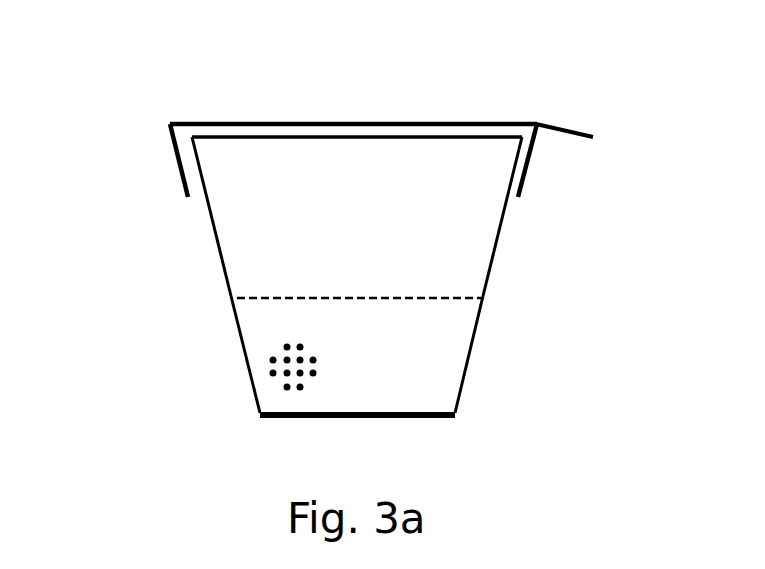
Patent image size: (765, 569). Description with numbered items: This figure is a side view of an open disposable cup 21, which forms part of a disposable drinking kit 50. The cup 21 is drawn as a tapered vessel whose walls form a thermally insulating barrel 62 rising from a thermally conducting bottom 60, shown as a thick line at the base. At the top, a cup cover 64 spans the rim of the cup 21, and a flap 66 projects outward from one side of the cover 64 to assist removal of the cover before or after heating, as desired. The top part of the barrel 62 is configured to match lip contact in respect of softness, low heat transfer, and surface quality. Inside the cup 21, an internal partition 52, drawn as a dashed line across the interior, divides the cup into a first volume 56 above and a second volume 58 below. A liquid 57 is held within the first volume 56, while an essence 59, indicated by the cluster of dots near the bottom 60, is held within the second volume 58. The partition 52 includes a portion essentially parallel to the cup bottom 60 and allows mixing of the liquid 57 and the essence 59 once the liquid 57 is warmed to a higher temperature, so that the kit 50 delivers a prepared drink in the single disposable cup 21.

The disposable cup 21 is at (193, 274).
The disposable drinking kit 50 is at (612, 311).
The internal partition 52 is at (420, 298).
The first volume 56 is at (443, 257).
The liquid 57 is at (443, 278).
The second volume 58 is at (255, 313).
The essence 59 is at (280, 365).
The thermally conducting bottom 60 is at (422, 420).
The thermally insulating barrel 62 is at (217, 233).
The cup cover 64 is at (458, 124).
The flap 66 is at (558, 126).